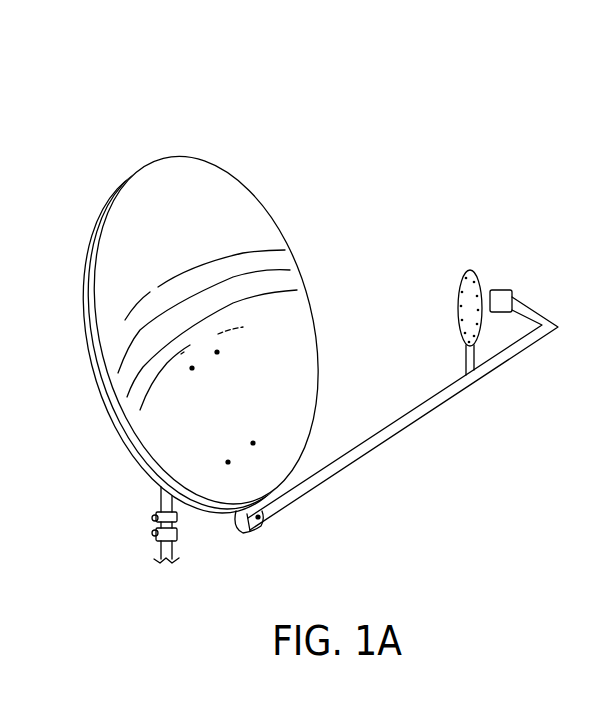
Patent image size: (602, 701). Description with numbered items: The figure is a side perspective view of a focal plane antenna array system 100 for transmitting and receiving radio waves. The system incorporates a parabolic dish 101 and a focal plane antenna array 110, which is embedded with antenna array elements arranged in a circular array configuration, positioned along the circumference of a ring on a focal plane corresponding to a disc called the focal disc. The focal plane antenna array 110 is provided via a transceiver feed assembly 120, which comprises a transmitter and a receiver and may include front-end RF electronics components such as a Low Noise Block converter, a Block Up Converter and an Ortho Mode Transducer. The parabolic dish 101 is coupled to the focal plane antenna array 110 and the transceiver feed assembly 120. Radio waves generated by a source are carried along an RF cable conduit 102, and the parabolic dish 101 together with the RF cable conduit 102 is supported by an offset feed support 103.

The focal plane antenna array system 100 is at (132, 124).
The parabolic dish 101 is at (178, 153).
The RF cable conduit 102 is at (310, 493).
The offset feed support 103 is at (250, 535).
The focal plane antenna array 110 is at (471, 270).
The transceiver feed assembly 120 is at (516, 291).